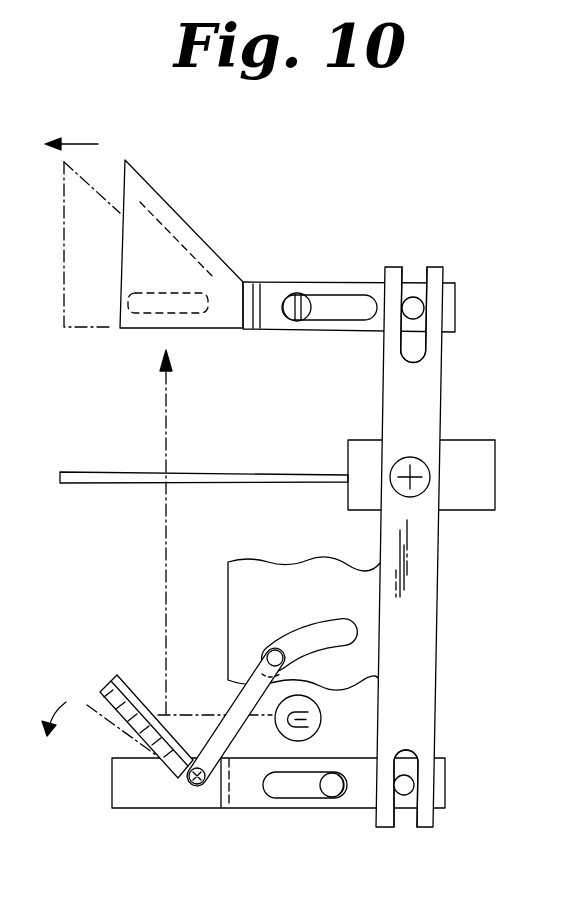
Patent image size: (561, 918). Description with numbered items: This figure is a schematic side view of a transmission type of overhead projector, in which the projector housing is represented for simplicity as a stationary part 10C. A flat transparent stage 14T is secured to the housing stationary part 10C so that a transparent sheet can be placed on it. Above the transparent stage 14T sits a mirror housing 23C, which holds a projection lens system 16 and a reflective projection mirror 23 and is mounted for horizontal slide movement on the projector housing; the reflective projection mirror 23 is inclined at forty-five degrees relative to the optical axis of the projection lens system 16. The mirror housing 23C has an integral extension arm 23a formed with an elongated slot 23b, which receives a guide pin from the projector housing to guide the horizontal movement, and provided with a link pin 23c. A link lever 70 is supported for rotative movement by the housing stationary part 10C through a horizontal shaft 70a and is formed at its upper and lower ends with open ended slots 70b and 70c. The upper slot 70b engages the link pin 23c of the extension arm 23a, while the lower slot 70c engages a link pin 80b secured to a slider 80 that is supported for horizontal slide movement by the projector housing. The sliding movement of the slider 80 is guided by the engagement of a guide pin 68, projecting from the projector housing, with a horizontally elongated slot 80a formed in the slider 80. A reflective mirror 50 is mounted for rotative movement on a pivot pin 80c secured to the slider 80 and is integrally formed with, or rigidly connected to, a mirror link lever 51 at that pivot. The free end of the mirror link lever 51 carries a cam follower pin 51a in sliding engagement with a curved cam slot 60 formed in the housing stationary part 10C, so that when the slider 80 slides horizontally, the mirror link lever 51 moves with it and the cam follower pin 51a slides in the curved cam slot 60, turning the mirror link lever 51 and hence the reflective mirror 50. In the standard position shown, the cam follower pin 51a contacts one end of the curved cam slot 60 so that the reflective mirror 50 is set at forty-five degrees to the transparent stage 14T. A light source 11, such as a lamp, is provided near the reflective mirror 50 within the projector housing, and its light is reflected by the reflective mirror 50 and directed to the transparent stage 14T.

The reflective projection mirror 23 is at (283, 267).
The mirror housing 23C is at (208, 238).
The extension arm 23a is at (357, 281).
The elongated slot 23b is at (323, 298).
The link pin 23c is at (415, 300).
The projection lens system 16 is at (143, 331).
The flat transparent stage 14T is at (258, 472).
The housing stationary part 10C is at (478, 440).
The link lever 70 is at (440, 574).
The horizontal shaft 70a is at (432, 477).
The upper open ended slot 70b is at (424, 270).
The lower open ended slot 70c is at (413, 829).
The curved cam slot 60 is at (328, 620).
The mirror link lever 51 is at (242, 698).
The cam follower pin 51a is at (272, 650).
The reflective mirror 50 is at (125, 674).
The light source 11 is at (323, 718).
The slider 80 is at (228, 809).
The horizontally elongated slot 80a is at (296, 788).
The link pin 80b is at (397, 798).
The pivot pin 80c is at (193, 785).
The guide pin 68 is at (332, 794).